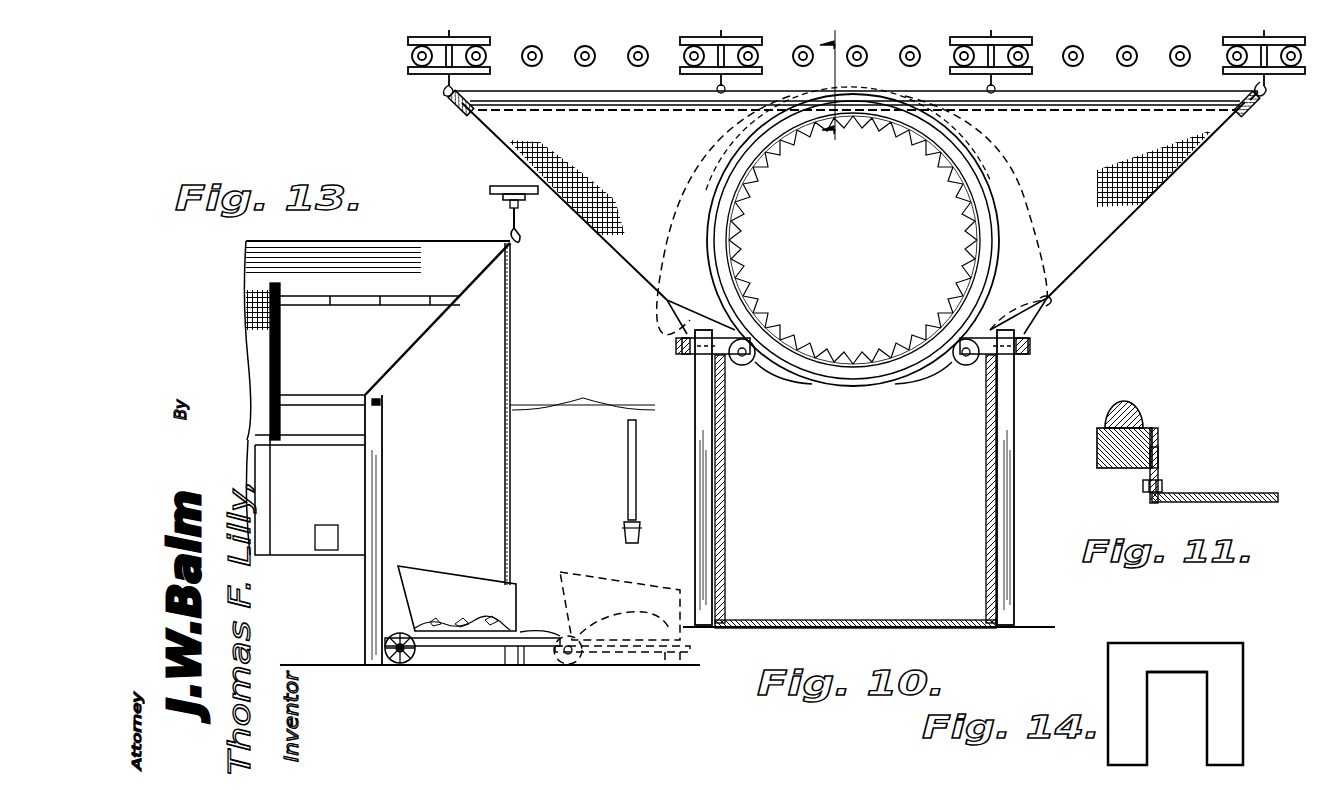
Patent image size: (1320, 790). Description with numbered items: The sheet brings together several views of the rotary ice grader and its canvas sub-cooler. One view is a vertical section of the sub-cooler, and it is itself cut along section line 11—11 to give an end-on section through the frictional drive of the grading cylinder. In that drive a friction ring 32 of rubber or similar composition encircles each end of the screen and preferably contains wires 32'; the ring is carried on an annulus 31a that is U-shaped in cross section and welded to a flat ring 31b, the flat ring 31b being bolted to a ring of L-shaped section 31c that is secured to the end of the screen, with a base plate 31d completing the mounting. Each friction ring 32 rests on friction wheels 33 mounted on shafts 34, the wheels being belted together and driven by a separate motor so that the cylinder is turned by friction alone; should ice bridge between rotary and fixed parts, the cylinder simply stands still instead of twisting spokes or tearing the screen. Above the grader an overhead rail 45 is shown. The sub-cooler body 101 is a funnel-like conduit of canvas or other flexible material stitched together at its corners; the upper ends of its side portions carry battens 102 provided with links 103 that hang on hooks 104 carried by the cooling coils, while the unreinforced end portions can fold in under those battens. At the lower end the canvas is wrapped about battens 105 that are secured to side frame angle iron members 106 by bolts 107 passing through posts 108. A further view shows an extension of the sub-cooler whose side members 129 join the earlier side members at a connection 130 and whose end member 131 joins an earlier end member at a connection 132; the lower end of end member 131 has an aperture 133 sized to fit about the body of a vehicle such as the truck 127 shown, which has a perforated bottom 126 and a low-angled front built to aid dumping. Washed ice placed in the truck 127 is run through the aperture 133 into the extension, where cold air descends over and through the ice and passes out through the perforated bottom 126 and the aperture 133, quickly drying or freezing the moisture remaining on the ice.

In FIG. 10, the section line 11 is at (842, 82).
In FIG. 10, the overhead rail 45 is at (850, 84).
In FIG. 10, the sub-cooler body 101 is at (722, 170).
In FIG. 10, the battens 102 is at (458, 113).
In FIG. 10, the links 103 is at (1250, 103).
In FIG. 10, the hooks 104 is at (1258, 95).
In FIG. 10, the battens 105 is at (1030, 352).
In FIG. 10, the side frame angle iron members 106 is at (990, 328).
In FIG. 10, the bolts 107 is at (1040, 333).
In FIG. 10, the posts 108 is at (703, 513).
In FIG. 10, the friction ring 32 is at (853, 255).
In FIG. 11, the friction ring 32 is at (1140, 403).
In FIG. 11, the wires 32' is at (1120, 466).
In FIG. 10, the friction wheels 33 is at (742, 366).
In FIG. 10, the shafts 34 is at (760, 372).
In FIG. 11, the annulus 31a is at (1158, 434).
In FIG. 11, the flat ring 31b is at (1158, 458).
In FIG. 11, the ring of L-shaped section 31c is at (1162, 486).
In FIG. 11, the base plate 31d is at (1254, 502).
In FIG. 13, the perforated bottom 126 is at (466, 660).
In FIG. 13, the truck 127 is at (399, 566).
In FIG. 13, the side members 129 is at (487, 375).
In FIG. 13, the connection 130 is at (372, 306).
In FIG. 13, the end member 131 is at (510, 485).
In FIG. 14, the end member 131 is at (1165, 632).
In FIG. 13, the connection 132 is at (515, 258).
In FIG. 13, the aperture 133 is at (560, 572).
In FIG. 14, the aperture 133 is at (1172, 685).